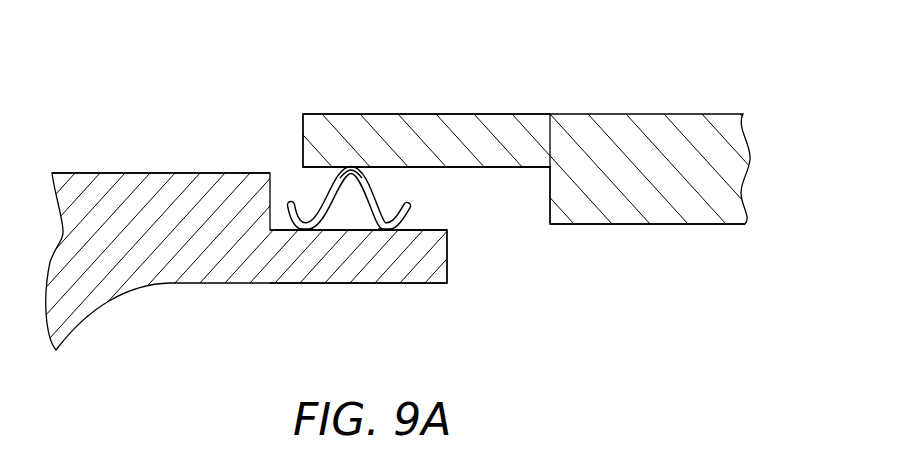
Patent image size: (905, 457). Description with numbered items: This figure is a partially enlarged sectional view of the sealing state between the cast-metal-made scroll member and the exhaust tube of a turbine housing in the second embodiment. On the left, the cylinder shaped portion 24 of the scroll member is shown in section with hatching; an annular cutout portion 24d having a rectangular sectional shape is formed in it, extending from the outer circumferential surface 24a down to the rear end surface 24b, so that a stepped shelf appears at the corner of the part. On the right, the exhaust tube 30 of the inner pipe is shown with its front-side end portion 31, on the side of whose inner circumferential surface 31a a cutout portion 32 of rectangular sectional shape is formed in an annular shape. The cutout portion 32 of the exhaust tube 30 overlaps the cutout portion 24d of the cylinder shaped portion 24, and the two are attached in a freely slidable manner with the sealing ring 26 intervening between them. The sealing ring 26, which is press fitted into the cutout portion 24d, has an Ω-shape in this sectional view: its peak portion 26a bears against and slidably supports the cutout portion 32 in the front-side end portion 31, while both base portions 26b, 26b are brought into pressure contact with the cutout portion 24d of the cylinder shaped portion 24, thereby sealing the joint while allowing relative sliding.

The cylinder shaped portion 24 is at (113, 172).
The outer circumferential surface 24a is at (213, 172).
The rear end surface 24b is at (448, 260).
The cutout portion 24d is at (432, 216).
The sealing ring 26 is at (348, 178).
The peak portion 26a is at (341, 166).
The base portions 26b is at (300, 230).
The exhaust tube 30 is at (678, 114).
The front-side end portion 31 is at (427, 133).
The inner circumferential surface 31a is at (640, 224).
The cutout portion 32 is at (467, 170).